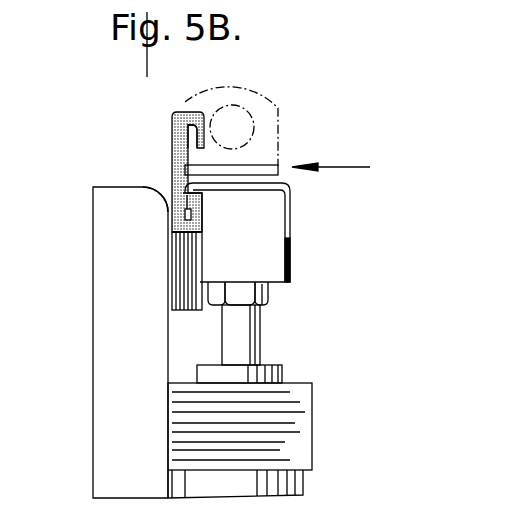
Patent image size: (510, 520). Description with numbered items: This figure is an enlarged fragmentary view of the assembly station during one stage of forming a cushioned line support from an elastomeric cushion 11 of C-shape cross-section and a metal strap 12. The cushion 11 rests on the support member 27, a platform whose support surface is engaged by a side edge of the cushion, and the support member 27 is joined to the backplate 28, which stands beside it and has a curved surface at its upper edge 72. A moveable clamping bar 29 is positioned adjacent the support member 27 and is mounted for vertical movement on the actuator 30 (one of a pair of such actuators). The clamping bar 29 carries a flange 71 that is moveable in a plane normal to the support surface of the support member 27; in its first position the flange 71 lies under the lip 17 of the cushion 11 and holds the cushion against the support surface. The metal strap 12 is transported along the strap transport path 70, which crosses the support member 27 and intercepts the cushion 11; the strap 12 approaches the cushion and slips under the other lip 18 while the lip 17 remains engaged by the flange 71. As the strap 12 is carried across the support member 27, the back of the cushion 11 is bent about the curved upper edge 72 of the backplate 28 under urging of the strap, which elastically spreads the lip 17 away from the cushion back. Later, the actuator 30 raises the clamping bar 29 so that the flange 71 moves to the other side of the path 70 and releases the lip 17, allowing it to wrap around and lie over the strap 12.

The elastomeric cushion 11 is at (172, 157).
The metal strap 12 is at (257, 165).
The lip 17 is at (202, 222).
The lip 18 is at (190, 139).
The support member 27 is at (182, 252).
The backplate 28 is at (102, 328).
The moveable clamping bar 29 is at (292, 218).
The actuator 30 is at (295, 483).
The strap transport path 70 is at (352, 167).
The flange 71 is at (202, 208).
The upper edge of backplate 72 is at (162, 186).